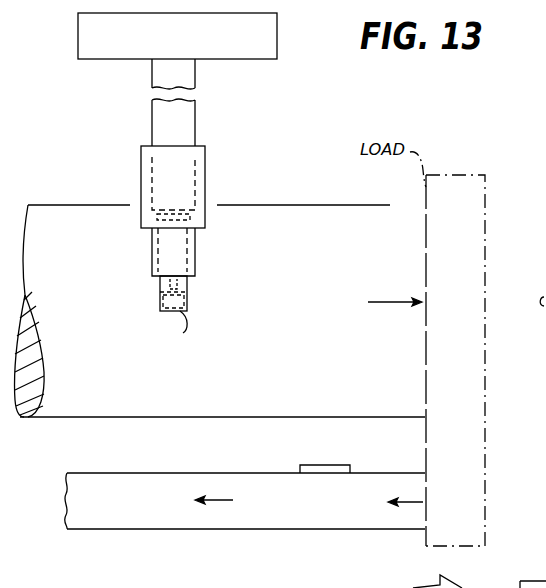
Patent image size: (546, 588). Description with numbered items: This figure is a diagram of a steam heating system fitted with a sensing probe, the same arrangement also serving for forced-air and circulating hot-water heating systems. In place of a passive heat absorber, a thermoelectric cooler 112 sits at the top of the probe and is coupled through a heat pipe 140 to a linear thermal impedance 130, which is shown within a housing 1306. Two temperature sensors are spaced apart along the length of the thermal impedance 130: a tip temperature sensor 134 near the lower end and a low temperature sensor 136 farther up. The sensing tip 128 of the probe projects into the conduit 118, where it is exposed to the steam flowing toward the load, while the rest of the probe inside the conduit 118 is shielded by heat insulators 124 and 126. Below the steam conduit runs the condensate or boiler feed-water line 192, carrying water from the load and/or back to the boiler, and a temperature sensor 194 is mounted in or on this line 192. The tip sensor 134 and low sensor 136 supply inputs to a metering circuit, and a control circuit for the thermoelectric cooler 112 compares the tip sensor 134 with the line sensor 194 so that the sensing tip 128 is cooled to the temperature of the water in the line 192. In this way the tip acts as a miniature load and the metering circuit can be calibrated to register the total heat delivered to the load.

The thermoelectric cooler 112 is at (277, 42).
The heat pipe 140 is at (195, 73).
The housing 1306 is at (205, 161).
The low temperature sensor 136 is at (150, 215).
The conduit 118 is at (300, 188).
The heat insulator 124 is at (152, 262).
The linear thermal impedance 130 is at (195, 252).
The sensing tip 128 is at (187, 288).
The tip temperature sensor 134 is at (160, 302).
The heat insulator 126 is at (167, 329).
The condensate line 192 is at (172, 458).
The temperature sensor 194 is at (312, 463).